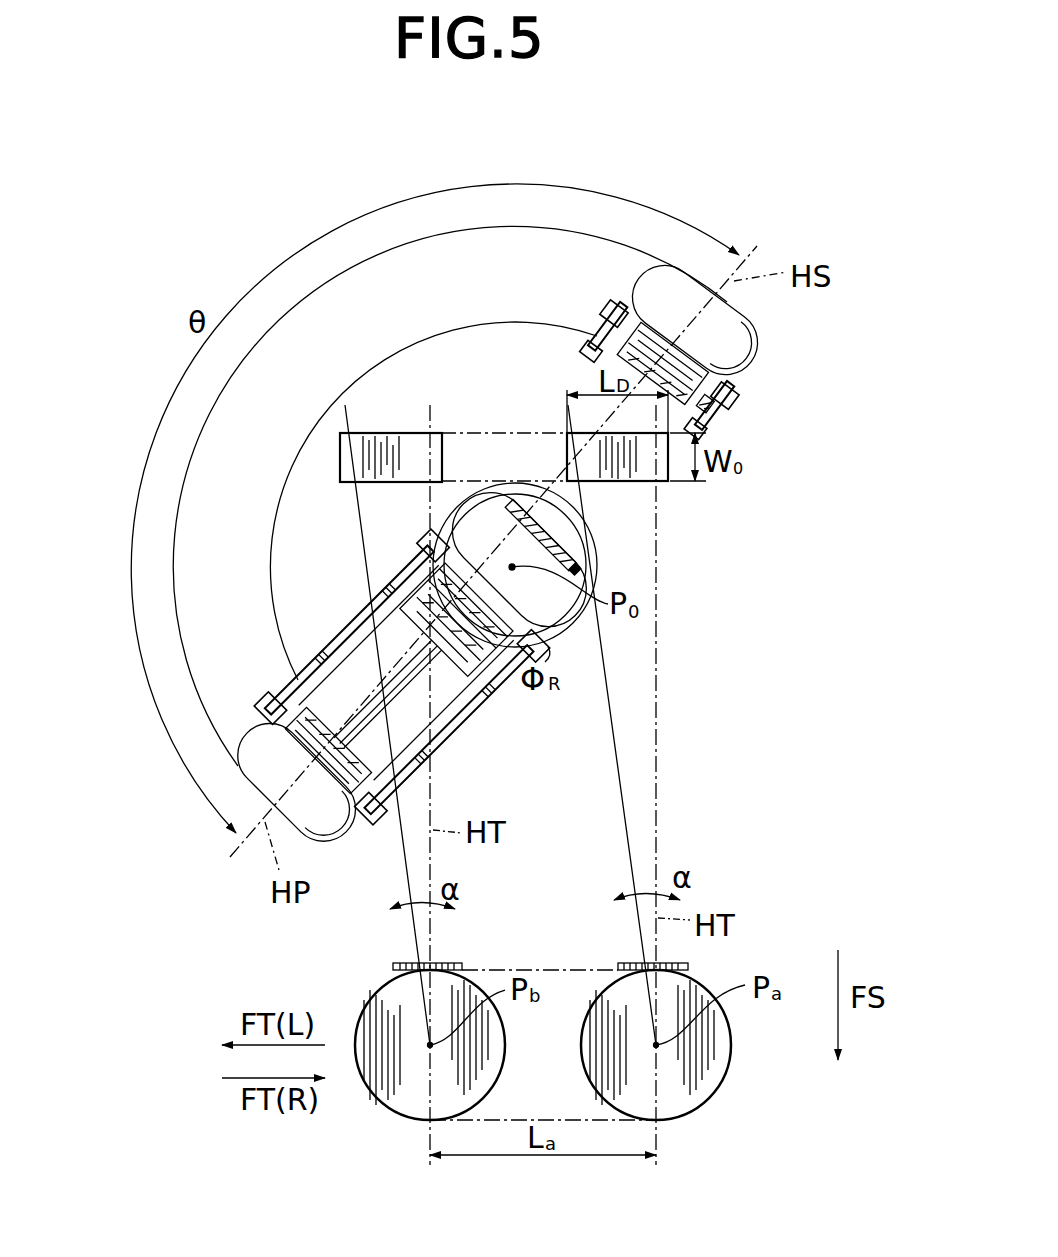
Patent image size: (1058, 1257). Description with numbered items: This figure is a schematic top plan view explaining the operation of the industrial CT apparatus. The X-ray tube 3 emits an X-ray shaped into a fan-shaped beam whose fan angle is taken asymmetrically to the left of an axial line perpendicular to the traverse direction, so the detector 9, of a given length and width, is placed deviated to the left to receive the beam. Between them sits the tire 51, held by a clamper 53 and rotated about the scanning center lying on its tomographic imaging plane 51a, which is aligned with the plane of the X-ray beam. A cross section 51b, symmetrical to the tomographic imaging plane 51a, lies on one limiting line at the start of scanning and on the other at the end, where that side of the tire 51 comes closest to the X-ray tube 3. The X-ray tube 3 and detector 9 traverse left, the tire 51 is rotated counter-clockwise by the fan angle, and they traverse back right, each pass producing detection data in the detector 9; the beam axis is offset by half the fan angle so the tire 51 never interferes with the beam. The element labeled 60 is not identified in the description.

The X-ray tube 3 is at (378, 1082).
The detector 9 is at (408, 433).
The tire 51 is at (637, 283).
The tomographic imaging plane 51a is at (487, 510).
The cross section 51b is at (757, 332).
The clamper 53 is at (748, 384).
The bearing ring 60 is at (528, 484).